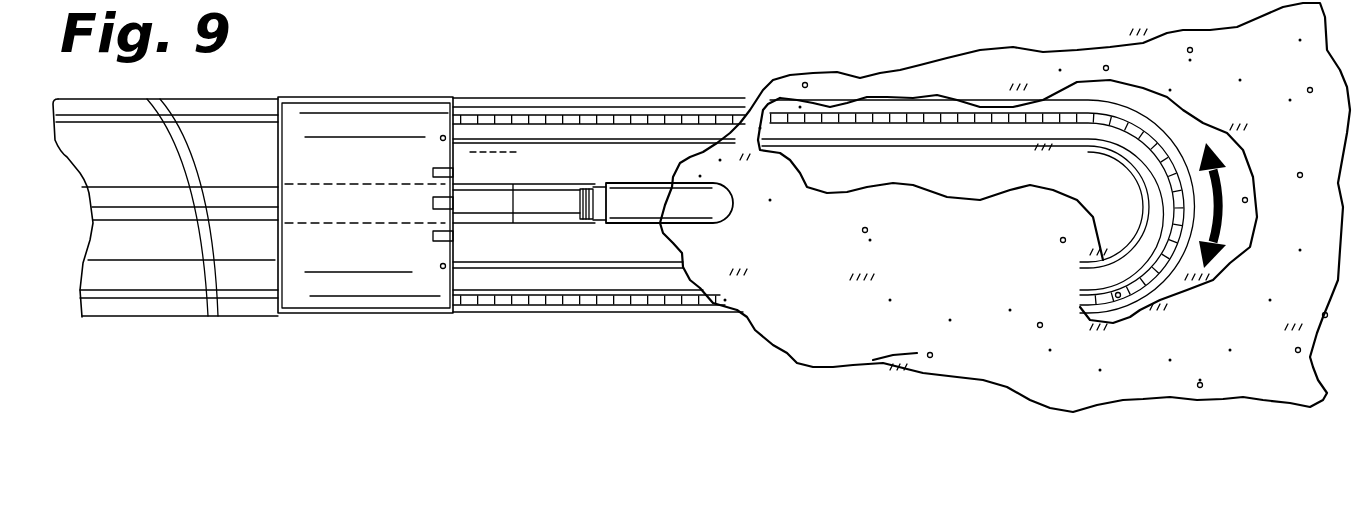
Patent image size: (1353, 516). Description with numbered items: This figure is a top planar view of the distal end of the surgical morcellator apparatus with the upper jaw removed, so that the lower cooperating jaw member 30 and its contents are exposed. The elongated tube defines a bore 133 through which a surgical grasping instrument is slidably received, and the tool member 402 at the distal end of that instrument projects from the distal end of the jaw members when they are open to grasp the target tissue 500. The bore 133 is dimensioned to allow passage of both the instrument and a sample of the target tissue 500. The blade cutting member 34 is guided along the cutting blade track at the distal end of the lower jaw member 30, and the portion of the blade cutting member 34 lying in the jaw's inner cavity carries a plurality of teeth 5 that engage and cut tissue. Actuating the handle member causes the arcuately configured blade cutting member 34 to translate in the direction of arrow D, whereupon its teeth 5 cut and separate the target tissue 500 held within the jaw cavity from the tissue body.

The teeth 5 is at (687, 113).
The lower cooperating jaw member 30 is at (532, 313).
The blade cutting member 34 is at (471, 311).
The bore 133 is at (462, 152).
The tool member 402 is at (633, 209).
The target tissue 500 is at (850, 368).
The arrow D is at (1224, 205).